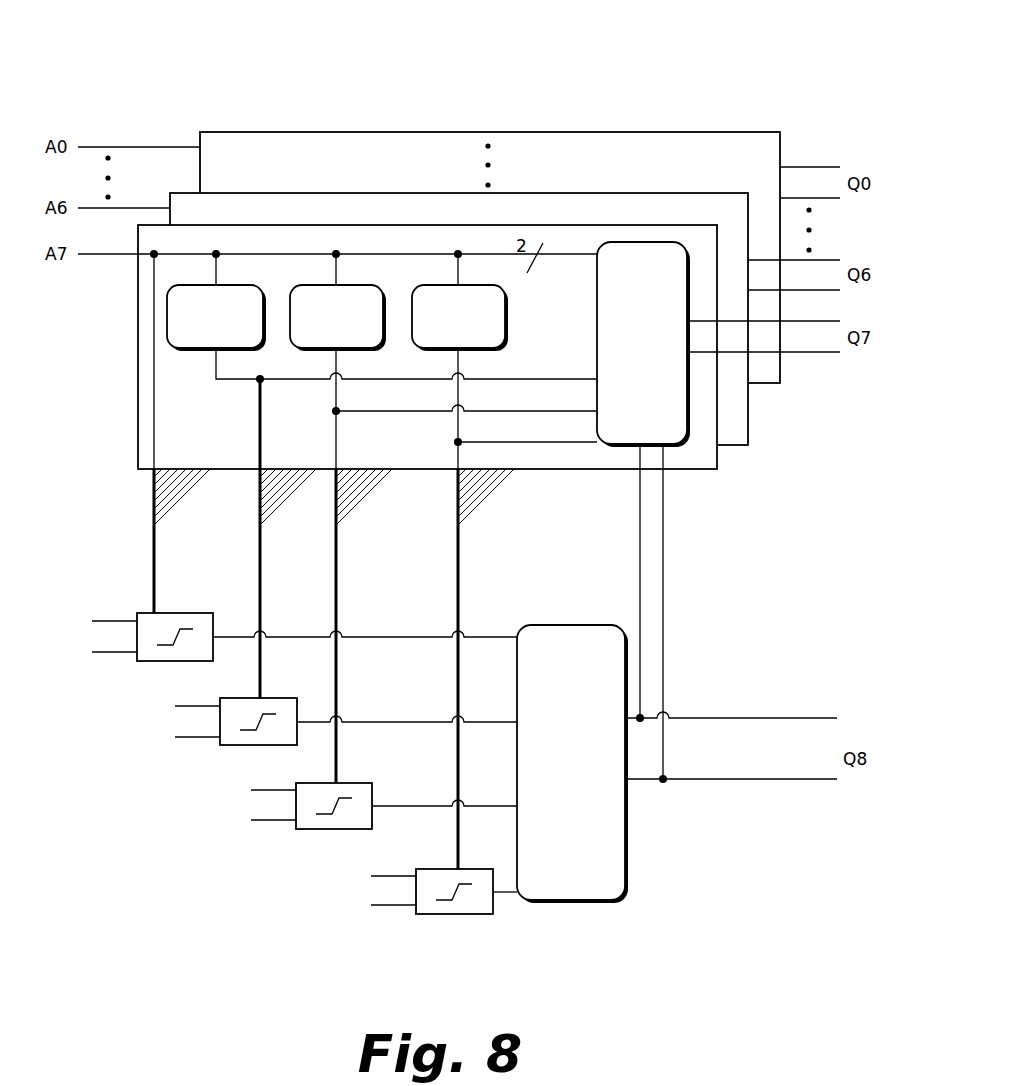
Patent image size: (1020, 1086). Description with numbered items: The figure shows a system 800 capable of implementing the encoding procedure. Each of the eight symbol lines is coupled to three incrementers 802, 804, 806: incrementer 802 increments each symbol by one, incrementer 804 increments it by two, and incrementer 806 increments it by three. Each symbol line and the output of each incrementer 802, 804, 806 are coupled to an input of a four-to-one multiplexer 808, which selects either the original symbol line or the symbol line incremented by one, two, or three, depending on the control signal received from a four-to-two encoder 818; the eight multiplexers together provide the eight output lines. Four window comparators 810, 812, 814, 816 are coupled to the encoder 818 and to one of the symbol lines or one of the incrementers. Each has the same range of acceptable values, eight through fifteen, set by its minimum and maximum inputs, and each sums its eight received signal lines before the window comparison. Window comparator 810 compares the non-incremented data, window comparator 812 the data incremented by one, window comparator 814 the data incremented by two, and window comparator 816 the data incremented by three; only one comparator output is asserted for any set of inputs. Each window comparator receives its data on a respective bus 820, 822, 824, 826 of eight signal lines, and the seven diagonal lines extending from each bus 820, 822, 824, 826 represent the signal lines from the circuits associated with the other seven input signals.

The system 800 is at (248, 38).
The incrementer 802 is at (231, 285).
The incrementer 804 is at (352, 285).
The incrementer 806 is at (505, 312).
The 4-to-1 multiplexer 808 is at (626, 387).
The window comparator 810 is at (158, 663).
The window comparator 812 is at (242, 747).
The window comparator 814 is at (330, 831).
The window comparator 816 is at (452, 916).
The 4-to-2 encoder 818 is at (555, 811).
The bus 820 is at (152, 569).
The bus 822 is at (259, 569).
The bus 824 is at (335, 569).
The bus 826 is at (457, 569).